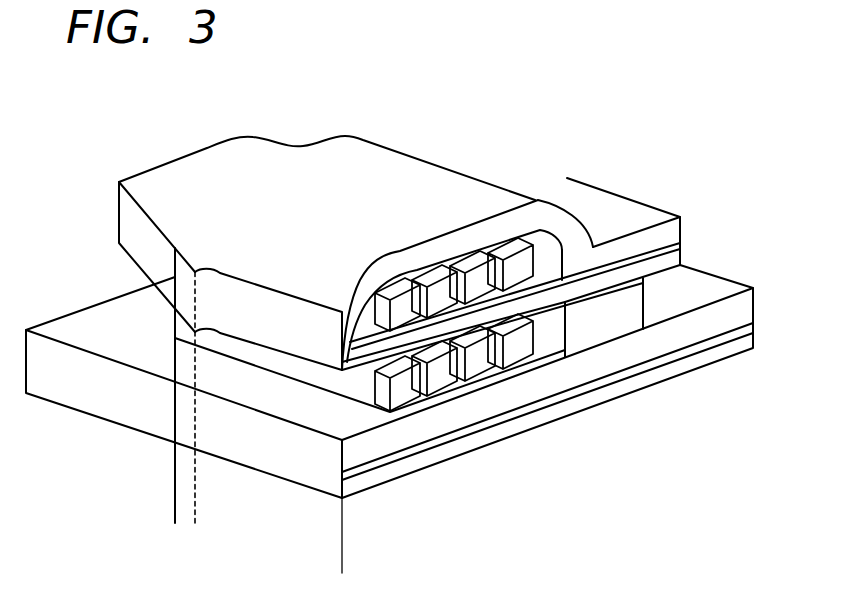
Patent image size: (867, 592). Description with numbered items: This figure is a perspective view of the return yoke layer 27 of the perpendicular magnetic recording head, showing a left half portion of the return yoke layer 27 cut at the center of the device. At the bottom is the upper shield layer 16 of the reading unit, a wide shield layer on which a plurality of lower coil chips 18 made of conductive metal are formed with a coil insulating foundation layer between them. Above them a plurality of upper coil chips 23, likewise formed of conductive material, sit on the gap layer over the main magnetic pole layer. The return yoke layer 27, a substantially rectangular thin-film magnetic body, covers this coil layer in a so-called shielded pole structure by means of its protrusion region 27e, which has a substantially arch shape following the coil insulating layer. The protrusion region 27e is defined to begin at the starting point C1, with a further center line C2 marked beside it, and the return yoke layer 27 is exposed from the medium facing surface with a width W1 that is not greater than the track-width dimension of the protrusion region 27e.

The upper shield layer 16 is at (723, 320).
The lower coil chip 18 is at (522, 352).
The upper coil chip 23 is at (487, 285).
The return yoke layer 27 is at (193, 191).
The protrusion region 27e is at (330, 253).
The starting point of the protrusion region C1 is at (175, 248).
The center line C2 is at (197, 272).
The width of the return yoke layer exposed from the medium facing surface W1 is at (342, 565).